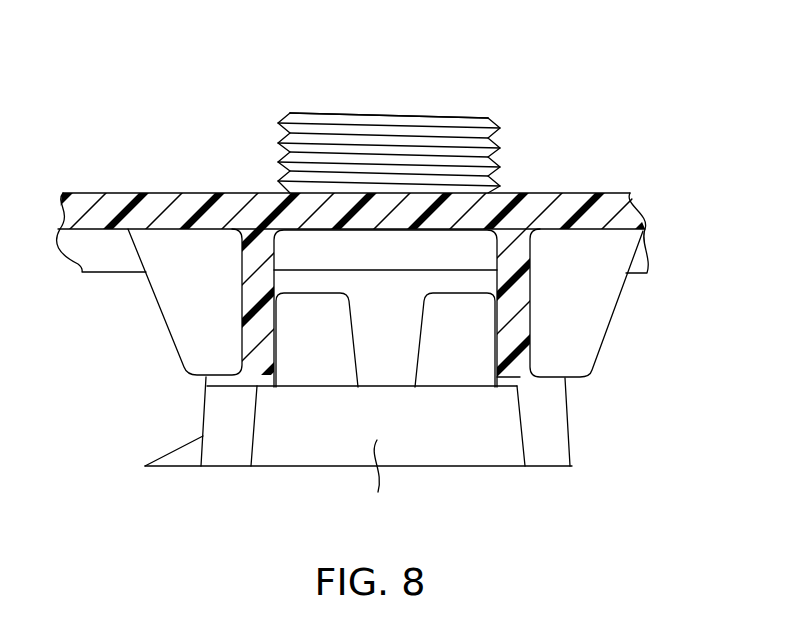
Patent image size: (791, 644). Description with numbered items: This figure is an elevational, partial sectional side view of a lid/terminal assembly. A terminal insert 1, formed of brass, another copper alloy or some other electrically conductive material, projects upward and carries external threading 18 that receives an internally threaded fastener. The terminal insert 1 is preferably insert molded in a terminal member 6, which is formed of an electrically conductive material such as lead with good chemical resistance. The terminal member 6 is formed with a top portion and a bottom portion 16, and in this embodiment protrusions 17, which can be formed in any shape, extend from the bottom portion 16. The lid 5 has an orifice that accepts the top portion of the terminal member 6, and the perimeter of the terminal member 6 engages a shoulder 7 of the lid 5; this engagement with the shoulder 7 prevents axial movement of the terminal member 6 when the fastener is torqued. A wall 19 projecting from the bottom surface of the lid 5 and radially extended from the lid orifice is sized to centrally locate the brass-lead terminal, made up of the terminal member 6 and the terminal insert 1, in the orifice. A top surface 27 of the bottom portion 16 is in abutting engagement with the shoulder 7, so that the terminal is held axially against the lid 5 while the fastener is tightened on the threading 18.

The terminal insert 1 is at (367, 117).
The lid 5 is at (223, 212).
The terminal member 6 is at (493, 467).
The shoulder 7 is at (458, 250).
The bottom portion 16 is at (385, 345).
The protrusions 17 is at (310, 350).
The external threading 18 is at (485, 118).
The wall 19 is at (513, 318).
The top surface 27 is at (313, 270).